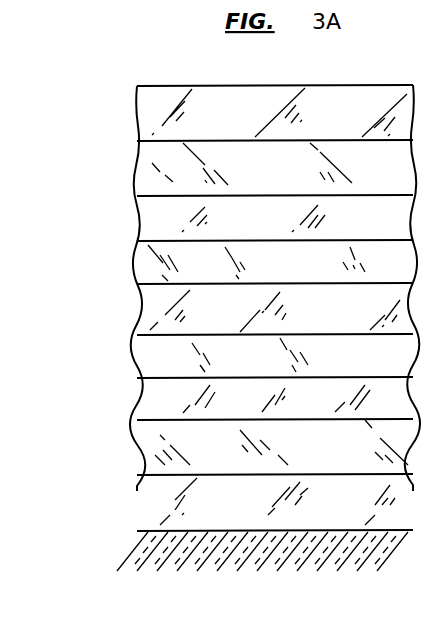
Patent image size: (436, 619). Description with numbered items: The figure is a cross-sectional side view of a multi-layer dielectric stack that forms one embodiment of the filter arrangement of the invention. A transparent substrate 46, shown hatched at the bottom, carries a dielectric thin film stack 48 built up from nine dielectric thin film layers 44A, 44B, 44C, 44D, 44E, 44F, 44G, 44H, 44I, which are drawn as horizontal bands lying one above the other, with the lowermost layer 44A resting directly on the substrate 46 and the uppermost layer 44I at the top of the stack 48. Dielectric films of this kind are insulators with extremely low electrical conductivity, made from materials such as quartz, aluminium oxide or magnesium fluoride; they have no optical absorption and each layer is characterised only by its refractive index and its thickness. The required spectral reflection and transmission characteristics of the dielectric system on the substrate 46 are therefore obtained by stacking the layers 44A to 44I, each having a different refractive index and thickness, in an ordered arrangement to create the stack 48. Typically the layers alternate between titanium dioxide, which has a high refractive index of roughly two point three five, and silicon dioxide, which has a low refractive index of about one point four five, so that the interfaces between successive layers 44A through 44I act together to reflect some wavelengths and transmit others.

The dielectric thin film stack 48 is at (70, 357).
The substrate 46 is at (100, 558).
The dielectric thin film layer 44A is at (137, 509).
The dielectric thin film layer 44B is at (137, 457).
The dielectric thin film layer 44C is at (137, 412).
The dielectric thin film layer 44D is at (137, 368).
The dielectric thin film layer 44E is at (137, 324).
The dielectric thin film layer 44F is at (137, 273).
The dielectric thin film layer 44G is at (137, 233).
The dielectric thin film layer 44H is at (137, 186).
The dielectric thin film layer 44I is at (137, 128).